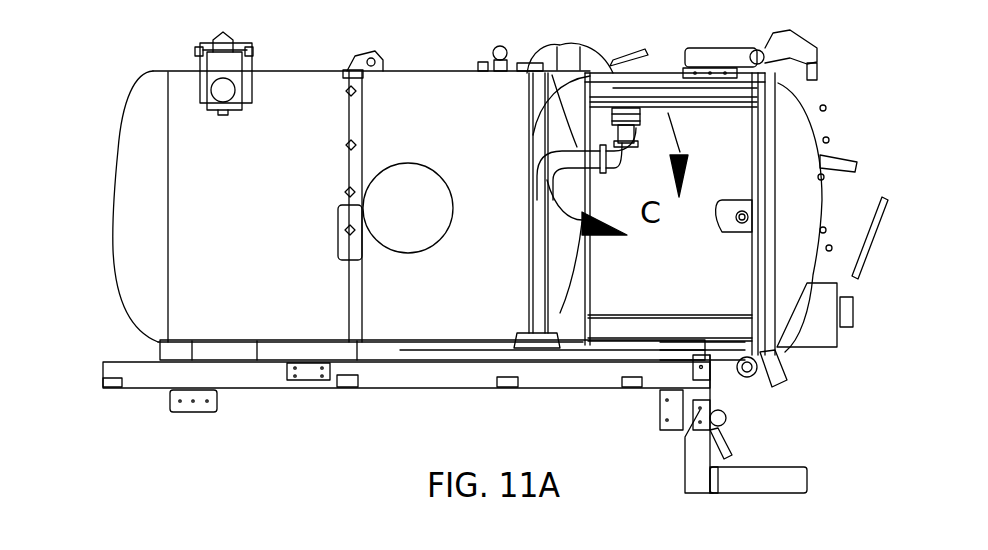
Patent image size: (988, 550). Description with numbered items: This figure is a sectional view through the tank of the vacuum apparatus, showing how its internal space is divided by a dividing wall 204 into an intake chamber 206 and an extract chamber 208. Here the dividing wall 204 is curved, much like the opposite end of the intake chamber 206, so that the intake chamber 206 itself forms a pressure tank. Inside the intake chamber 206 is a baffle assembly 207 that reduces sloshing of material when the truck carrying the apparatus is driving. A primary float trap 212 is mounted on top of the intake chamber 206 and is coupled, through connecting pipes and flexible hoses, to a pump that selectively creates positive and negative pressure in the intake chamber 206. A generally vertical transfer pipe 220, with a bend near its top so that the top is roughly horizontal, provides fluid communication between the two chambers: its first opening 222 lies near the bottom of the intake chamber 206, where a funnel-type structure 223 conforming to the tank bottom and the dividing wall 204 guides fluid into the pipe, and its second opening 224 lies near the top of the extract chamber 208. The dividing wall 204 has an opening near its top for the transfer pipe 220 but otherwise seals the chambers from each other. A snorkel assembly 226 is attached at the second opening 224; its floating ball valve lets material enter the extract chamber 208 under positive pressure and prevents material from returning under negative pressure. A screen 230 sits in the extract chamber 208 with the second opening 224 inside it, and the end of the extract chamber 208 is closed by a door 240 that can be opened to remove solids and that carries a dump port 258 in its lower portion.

The dividing wall 204 is at (560, 315).
The intake chamber 206 is at (398, 317).
The baffle assembly 207 is at (347, 163).
The extract chamber 208 is at (607, 335).
The primary float trap 212 is at (200, 70).
The transfer pipe 220 is at (542, 220).
The first opening 222 is at (525, 325).
The funnel-type structure 223 is at (522, 335).
The second opening 224 is at (585, 150).
The snorkel assembly 226 is at (620, 143).
The screen 230 is at (669, 100).
The door 240 is at (798, 163).
The dump port 258 is at (840, 338).